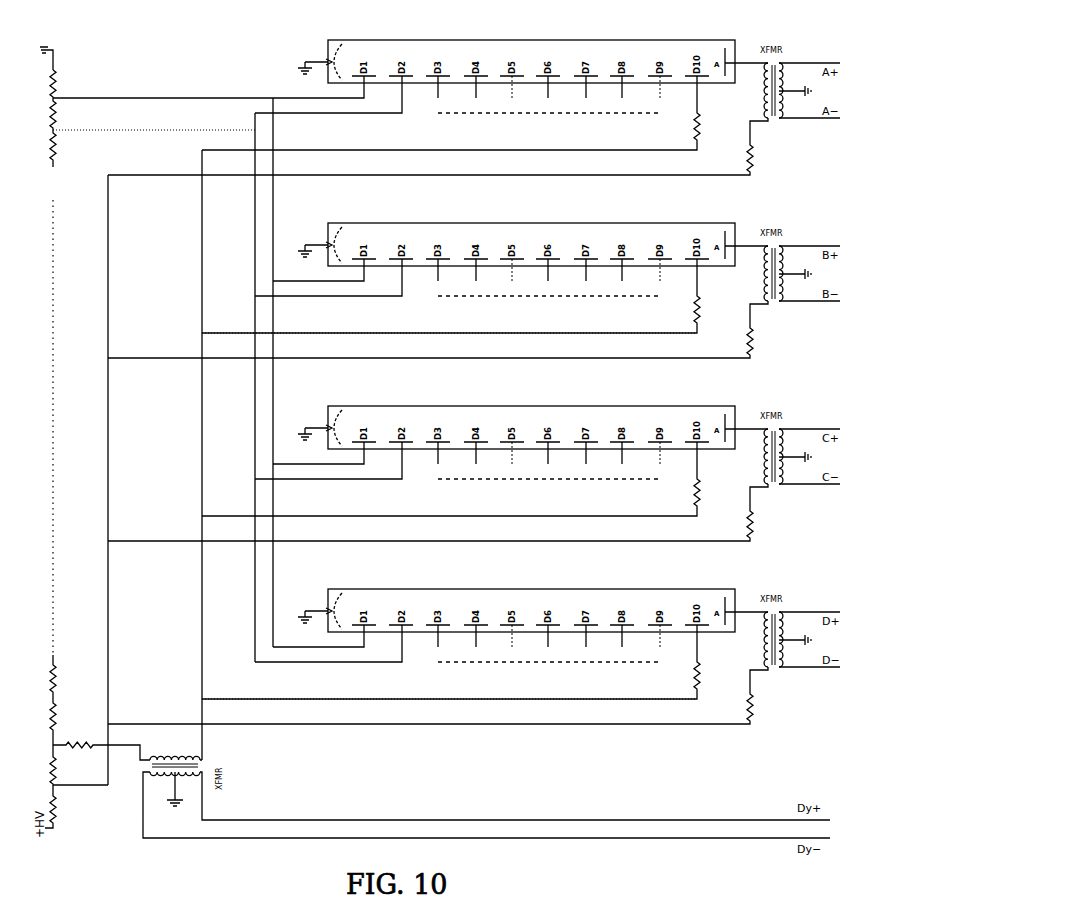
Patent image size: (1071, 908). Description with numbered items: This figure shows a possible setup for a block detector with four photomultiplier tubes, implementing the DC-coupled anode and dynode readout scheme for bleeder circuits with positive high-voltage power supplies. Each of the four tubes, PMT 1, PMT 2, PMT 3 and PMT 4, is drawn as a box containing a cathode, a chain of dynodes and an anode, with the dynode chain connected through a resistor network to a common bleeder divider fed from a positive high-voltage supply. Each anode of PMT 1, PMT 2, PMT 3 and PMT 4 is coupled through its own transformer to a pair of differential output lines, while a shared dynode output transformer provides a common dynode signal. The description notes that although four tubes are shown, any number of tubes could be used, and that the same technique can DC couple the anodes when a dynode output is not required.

The photomultiplier tube PMT1 1 is at (474, 97).
The photomultiplier tube PMT2 2 is at (474, 280).
The photomultiplier tube PMT3 3 is at (474, 463).
The photomultiplier tube PMT4 4 is at (474, 646).